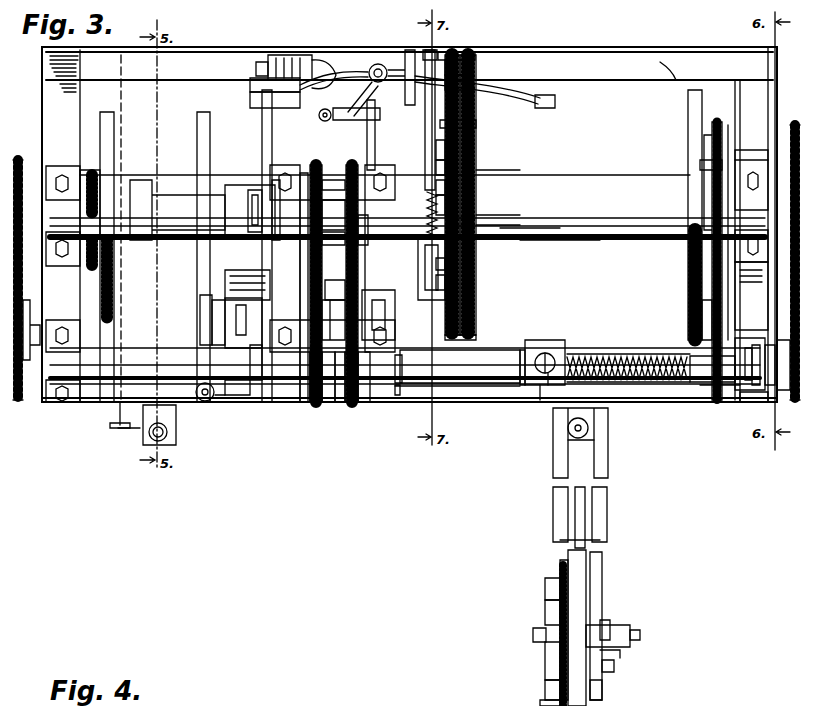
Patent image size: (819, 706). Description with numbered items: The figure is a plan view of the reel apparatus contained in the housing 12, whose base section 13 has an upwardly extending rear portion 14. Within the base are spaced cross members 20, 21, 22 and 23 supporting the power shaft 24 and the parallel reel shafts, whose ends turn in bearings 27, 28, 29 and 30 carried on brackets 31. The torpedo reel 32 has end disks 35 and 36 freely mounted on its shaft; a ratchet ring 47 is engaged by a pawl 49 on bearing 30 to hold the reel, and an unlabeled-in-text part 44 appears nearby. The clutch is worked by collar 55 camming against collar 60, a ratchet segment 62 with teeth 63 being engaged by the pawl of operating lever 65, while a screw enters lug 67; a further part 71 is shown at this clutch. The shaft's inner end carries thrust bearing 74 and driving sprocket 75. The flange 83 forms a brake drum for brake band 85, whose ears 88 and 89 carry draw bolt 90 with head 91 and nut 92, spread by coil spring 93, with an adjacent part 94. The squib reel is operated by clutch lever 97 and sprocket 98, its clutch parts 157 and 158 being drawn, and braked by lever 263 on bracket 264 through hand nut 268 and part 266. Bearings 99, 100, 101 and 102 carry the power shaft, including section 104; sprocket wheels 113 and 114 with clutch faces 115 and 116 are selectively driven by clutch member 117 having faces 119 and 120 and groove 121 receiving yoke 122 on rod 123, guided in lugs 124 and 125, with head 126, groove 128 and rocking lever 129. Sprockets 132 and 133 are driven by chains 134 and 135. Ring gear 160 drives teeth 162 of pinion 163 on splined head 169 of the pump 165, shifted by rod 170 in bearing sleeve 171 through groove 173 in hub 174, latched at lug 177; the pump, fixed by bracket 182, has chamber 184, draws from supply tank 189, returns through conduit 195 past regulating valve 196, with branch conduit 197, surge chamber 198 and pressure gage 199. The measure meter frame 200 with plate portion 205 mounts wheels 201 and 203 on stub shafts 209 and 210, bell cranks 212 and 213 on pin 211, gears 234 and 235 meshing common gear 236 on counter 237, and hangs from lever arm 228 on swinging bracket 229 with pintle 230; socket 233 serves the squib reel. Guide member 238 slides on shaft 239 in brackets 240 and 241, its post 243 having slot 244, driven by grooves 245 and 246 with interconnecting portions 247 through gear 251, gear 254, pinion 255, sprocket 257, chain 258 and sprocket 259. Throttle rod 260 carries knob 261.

The housing 12 is at (742, 50).
The base section 13 is at (218, 402).
The rear portion 14 is at (652, 49).
The cross member 20 is at (74, 97).
The cross member 21 is at (264, 144).
The cross member 22 is at (368, 134).
The cross member 23 is at (740, 100).
The power shaft 24 is at (182, 398).
The bearing 27 is at (92, 195).
The bearing 28 is at (275, 184).
The bearing 29 is at (360, 180).
The bearing 30 is at (740, 160).
The bracket 31 is at (746, 170).
The torpedo reel 32 is at (589, 180).
The end disk 35 is at (475, 322).
The end disk 36 is at (688, 270).
The bearing block 44 is at (740, 265).
The ratchet ring 47 is at (726, 160).
The pawl 49 is at (734, 280).
The collar 55 is at (462, 140).
The collar 60 is at (352, 210).
The ratchet segment 62 is at (410, 200).
The teeth 63 is at (252, 188).
The operating lever 65 is at (412, 240).
The lug 67 is at (378, 178).
The collar 71 is at (352, 228).
The anti-friction thrust bearing 74 is at (348, 250).
The driving sprocket 75 is at (322, 190).
The flange 83 is at (464, 195).
The brake band 85 is at (476, 304).
The ear 88 is at (462, 175).
The ear 89 is at (462, 224).
The draw bolt 90 is at (462, 210).
The head 91 is at (476, 268).
The nut 92 is at (460, 158).
The coil spring 93 is at (470, 178).
The pin 94 is at (476, 286).
The clutch lever 97 is at (240, 240).
The sprocket 98 is at (305, 178).
The bearing 99 is at (50, 402).
The bearing 100 is at (255, 402).
The bearing 101 is at (405, 386).
The bearing 102 is at (755, 404).
The shaft section 104 is at (190, 356).
The sprocket wheel 113 is at (303, 402).
The sprocket wheel 114 is at (362, 402).
The clutch face 115 is at (314, 402).
The clutch face 116 is at (350, 402).
The clutch member 117 is at (319, 402).
The clutch face 119 is at (328, 402).
The clutch face 120 is at (347, 290).
The annular groove 121 is at (340, 402).
The actuating yoke 122 is at (342, 300).
The rod 123 is at (495, 386).
The lug 124 is at (262, 308).
The lug 125 is at (396, 322).
The head 126 is at (266, 348).
The annular groove 128 is at (395, 380).
The rocking lever 129 is at (402, 383).
The sprocket 132 is at (22, 400).
The sprocket 133 is at (792, 410).
The chain 134 is at (30, 150).
The chain 135 is at (798, 130).
The bearing 157 is at (278, 280).
The collar 158 is at (352, 190).
The ring gear 160 is at (476, 338).
The teeth 162 is at (466, 64).
The pinion 163 is at (466, 74).
The pump 165 is at (270, 105).
The splined head 169 is at (413, 50).
The rod 170 is at (333, 114).
The bearing sleeve 171 is at (325, 121).
The groove 173 is at (445, 52).
The hub 174 is at (460, 52).
The lug 177 is at (360, 106).
The bracket 182 is at (270, 88).
The cylindrical chamber 184 is at (704, 135).
The supply tank 189 is at (690, 49).
The conduit 195 is at (530, 100).
The regulating valve 196 is at (378, 64).
The branch conduit 197 is at (336, 60).
The surge chamber 198 is at (312, 40).
The pressure gage 199 is at (262, 66).
The frame 200 is at (540, 566).
The wheel 201 is at (562, 568).
The wheel 203 is at (540, 698).
The plate portion 205 is at (578, 690).
The stub shaft 209 is at (532, 614).
The stub shaft 210 is at (530, 658).
The pin 211 is at (533, 635).
The bell crank 212 is at (532, 592).
The bell crank 213 is at (533, 672).
The lever arm 228 is at (602, 580).
The swinging bracket 229 is at (608, 460).
The pintle 230 is at (572, 436).
The socket 233 is at (118, 428).
The gear 234 is at (566, 578).
The gear 235 is at (578, 674).
The common gear 236 is at (580, 622).
The counter 237 is at (628, 630).
The guide member 238 is at (556, 350).
The shaft 239 is at (588, 356).
The bracket 240 is at (402, 392).
The bracket 241 is at (740, 390).
The post 243 is at (540, 386).
The vertical slot 244 is at (548, 380).
The spiral cam groove 245 is at (618, 354).
The spiral cam groove 246 is at (640, 356).
The interconnecting portion 247 is at (690, 383).
The gear 251 is at (756, 392).
The gear 254 is at (768, 392).
The pinion gear 255 is at (748, 390).
The sprocket 257 is at (720, 386).
The chain 258 is at (704, 310).
The sprocket 259 is at (716, 166).
The rod 260 is at (125, 92).
The knob 261 is at (112, 428).
The lever 263 is at (206, 330).
The bracket 264 is at (202, 303).
The link 266 is at (226, 404).
The hand nut 268 is at (222, 402).